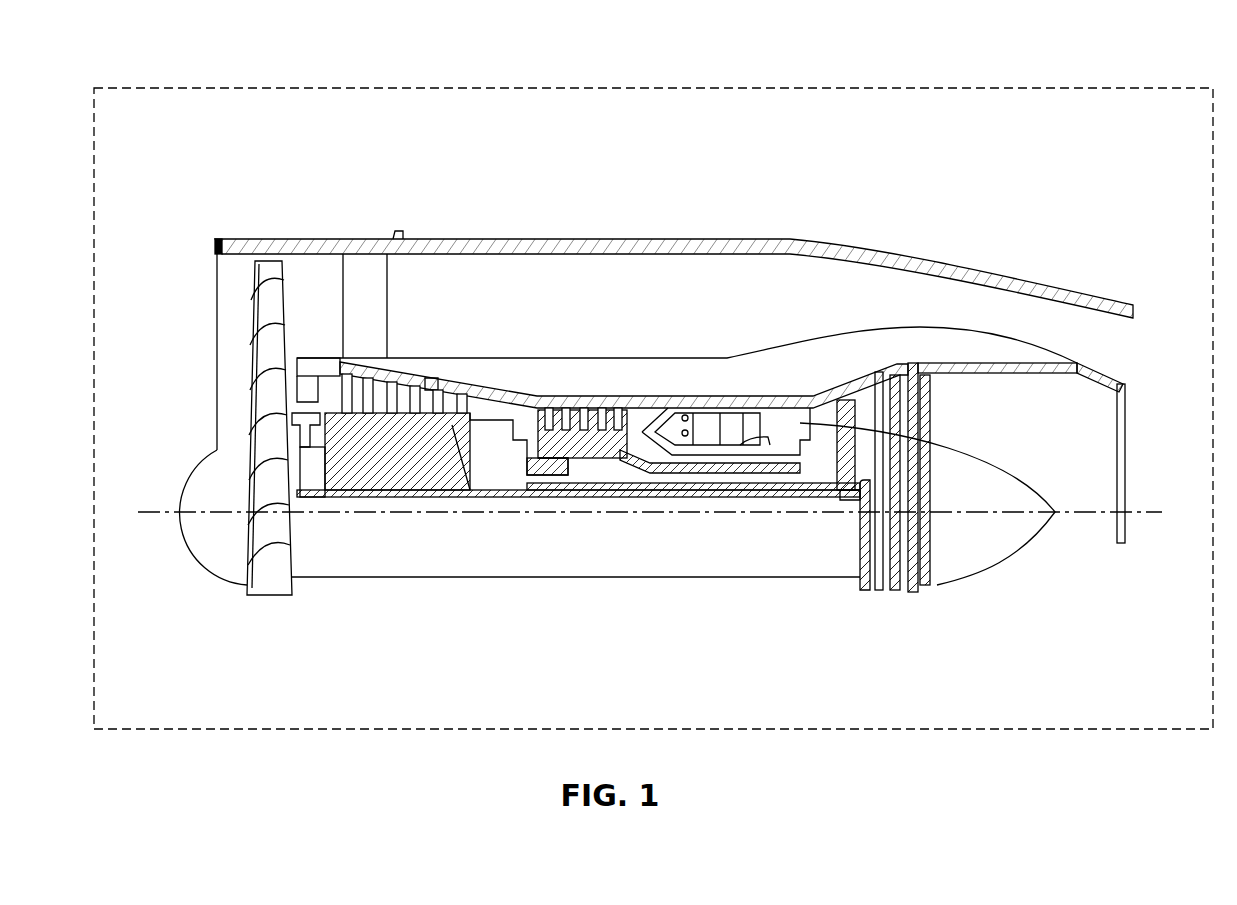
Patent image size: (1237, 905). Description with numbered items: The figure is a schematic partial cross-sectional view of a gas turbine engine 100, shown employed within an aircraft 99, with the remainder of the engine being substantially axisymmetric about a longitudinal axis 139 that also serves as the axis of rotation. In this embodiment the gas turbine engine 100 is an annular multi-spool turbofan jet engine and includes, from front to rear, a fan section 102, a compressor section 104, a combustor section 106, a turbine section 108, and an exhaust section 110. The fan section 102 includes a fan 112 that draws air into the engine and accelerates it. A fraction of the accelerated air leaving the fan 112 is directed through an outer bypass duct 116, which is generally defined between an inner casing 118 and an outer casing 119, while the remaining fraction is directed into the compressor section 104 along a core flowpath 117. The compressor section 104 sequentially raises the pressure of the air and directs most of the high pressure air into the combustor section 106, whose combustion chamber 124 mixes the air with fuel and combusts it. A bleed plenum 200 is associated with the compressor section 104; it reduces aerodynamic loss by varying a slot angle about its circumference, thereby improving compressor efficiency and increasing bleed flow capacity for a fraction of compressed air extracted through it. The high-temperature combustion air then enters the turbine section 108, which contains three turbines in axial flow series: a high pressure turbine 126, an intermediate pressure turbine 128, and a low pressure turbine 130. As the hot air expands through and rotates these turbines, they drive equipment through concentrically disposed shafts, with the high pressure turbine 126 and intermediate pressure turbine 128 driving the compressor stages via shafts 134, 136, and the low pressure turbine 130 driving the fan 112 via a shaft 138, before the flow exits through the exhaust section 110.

The aircraft 99 is at (150, 76).
The gas turbine engine 100 is at (242, 185).
The fan section 102 is at (170, 648).
The compressor section 104 is at (648, 648).
The combustor section 106 is at (750, 648).
The turbine section 108 is at (758, 648).
The exhaust section 110 is at (935, 648).
The fan 112 is at (238, 334).
The outer bypass duct 116 is at (582, 272).
The core flowpath 117 is at (322, 383).
The inner casing 118 is at (428, 386).
The outer casing 119 is at (625, 242).
The combustion chamber 124 is at (745, 418).
The high pressure turbine 126 is at (805, 404).
The intermediate pressure turbine 128 is at (847, 402).
The low pressure turbine 130 is at (902, 477).
The shaft 134 is at (660, 483).
The shaft 136 is at (750, 497).
The shaft 138 is at (847, 500).
The longitudinal axis 139 is at (157, 511).
The bleed plenum 200 is at (442, 372).